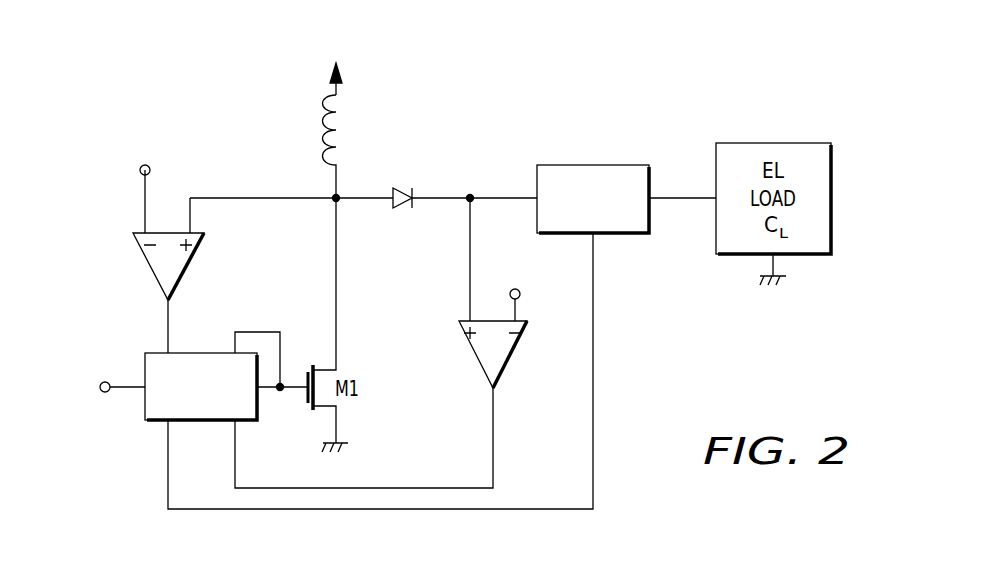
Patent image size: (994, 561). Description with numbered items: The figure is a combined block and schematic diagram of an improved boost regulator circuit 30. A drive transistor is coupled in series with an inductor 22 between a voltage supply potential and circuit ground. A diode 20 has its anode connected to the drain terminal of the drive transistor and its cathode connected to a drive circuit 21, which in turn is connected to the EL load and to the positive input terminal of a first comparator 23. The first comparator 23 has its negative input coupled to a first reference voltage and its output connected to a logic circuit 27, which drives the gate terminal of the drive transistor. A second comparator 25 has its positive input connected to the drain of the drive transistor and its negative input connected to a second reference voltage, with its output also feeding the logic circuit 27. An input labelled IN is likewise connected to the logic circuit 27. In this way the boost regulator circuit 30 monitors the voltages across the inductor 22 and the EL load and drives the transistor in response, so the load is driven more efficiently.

The diode 20 is at (403, 190).
The drive circuit 21 is at (625, 235).
The inductor 22 is at (333, 123).
The first comparator 23 is at (478, 358).
The second comparator 25 is at (151, 273).
The logic circuit 27 is at (189, 352).
The improved boost regulator circuit 30 is at (527, 102).